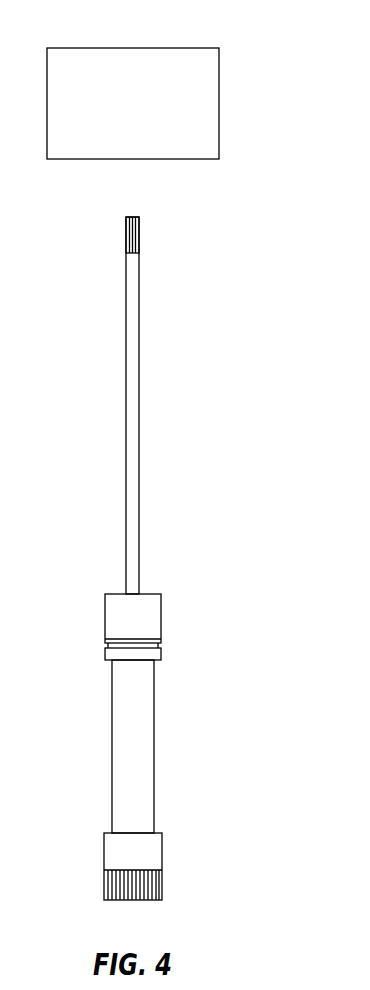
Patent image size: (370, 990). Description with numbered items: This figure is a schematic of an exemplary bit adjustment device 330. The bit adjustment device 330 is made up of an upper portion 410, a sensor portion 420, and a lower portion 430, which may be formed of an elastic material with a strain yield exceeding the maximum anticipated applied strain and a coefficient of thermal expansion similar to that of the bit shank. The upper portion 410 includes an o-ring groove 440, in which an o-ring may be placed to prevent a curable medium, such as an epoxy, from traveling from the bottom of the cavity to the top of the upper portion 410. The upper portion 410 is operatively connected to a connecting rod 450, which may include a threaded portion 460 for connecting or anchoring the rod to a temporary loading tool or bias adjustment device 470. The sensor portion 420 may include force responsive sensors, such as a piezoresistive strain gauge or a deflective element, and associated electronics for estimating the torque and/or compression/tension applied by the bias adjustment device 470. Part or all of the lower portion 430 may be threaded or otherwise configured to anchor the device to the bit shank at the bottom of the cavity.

The bias adjustment device 470 is at (187, 48).
The bit adjustment device 330 is at (188, 211).
The threaded portion 460 is at (140, 232).
The connecting rod 450 is at (140, 390).
The upper portion 410 is at (104, 620).
The o-ring groove 440 is at (161, 646).
The sensor portion 420 is at (111, 754).
The lower portion 430 is at (103, 853).